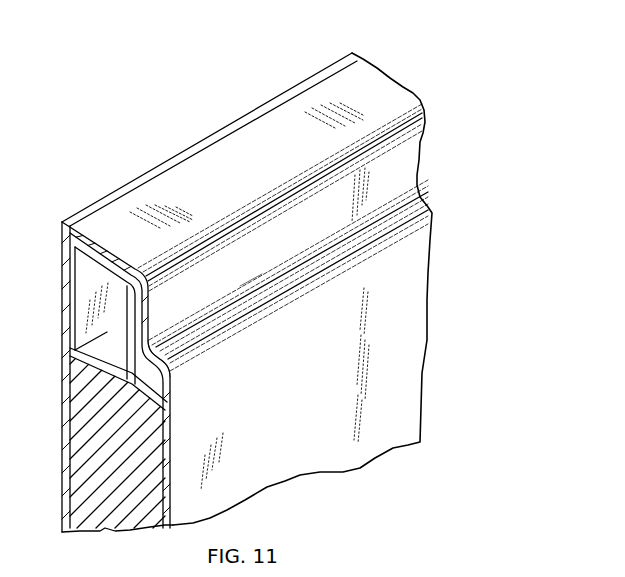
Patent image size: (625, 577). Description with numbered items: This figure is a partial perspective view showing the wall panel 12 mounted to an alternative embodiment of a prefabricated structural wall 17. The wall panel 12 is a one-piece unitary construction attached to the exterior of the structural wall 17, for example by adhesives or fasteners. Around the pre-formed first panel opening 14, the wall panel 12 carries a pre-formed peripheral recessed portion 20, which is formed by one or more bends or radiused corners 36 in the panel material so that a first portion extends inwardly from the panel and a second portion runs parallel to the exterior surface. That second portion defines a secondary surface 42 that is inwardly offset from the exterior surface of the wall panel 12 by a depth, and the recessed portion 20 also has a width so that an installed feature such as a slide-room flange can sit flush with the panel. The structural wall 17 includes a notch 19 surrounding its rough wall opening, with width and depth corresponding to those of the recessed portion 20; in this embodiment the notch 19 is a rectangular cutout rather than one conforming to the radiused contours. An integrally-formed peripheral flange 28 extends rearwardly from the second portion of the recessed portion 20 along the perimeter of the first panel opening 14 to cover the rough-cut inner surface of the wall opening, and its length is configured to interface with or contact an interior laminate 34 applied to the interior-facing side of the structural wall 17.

The wall panel 12 is at (383, 383).
The first panel opening 14 is at (203, 77).
The structural wall 17 is at (115, 439).
The notch 19 is at (140, 368).
The recessed portion 20 is at (254, 266).
The peripheral flange 28 is at (158, 202).
The interior laminate 34 is at (84, 207).
The bends or radiused corners 36 is at (212, 232).
The secondary surface 42 is at (395, 177).